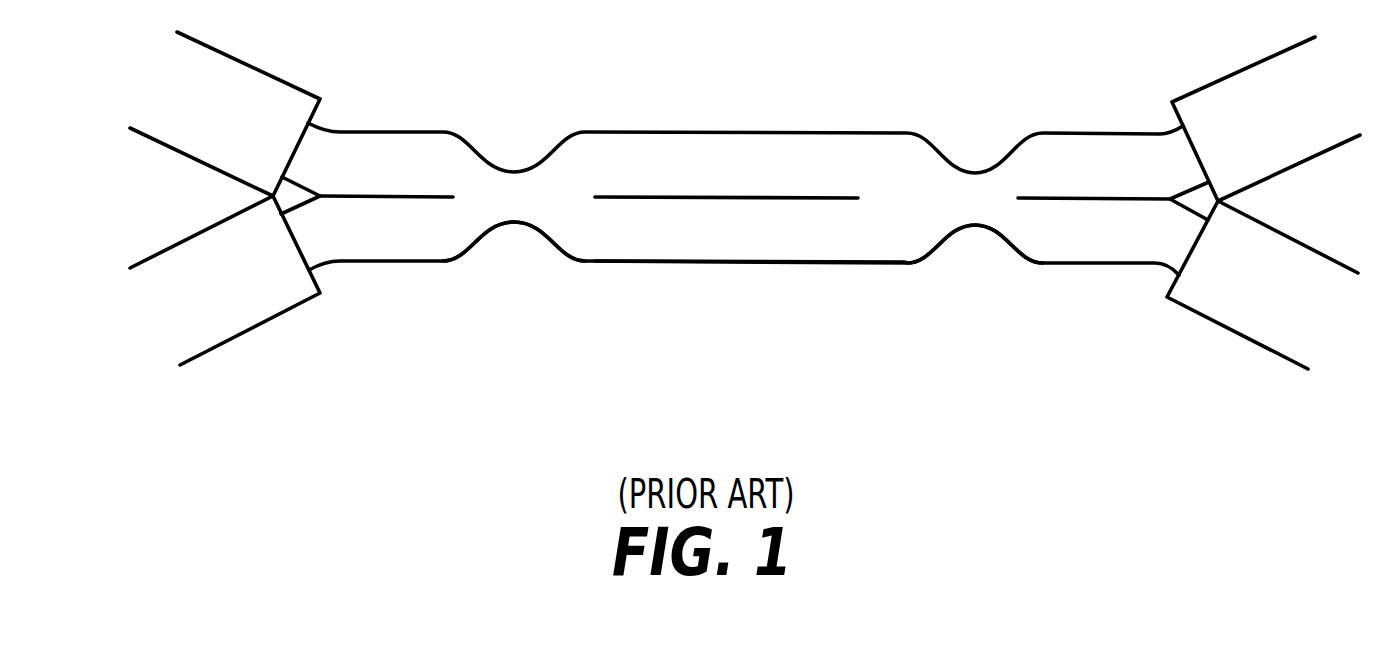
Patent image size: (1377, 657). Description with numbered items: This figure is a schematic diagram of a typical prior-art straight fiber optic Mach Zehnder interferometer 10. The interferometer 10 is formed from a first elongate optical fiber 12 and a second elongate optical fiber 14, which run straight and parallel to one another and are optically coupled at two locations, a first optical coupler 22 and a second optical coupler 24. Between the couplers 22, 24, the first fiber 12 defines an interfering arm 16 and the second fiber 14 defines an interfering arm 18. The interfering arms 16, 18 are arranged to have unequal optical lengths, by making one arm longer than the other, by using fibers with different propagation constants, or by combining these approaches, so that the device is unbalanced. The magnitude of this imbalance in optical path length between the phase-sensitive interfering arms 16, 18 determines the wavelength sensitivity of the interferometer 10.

The fiber optic Mach Zehnder interferometer 10 is at (743, 73).
The first elongate optical fiber 12 is at (385, 152).
The second elongate optical fiber 14 is at (353, 242).
The interfering arm 16 is at (788, 180).
The interfering arm 18 is at (732, 243).
The first optical coupler 22 is at (520, 242).
The second optical coupler 24 is at (972, 245).